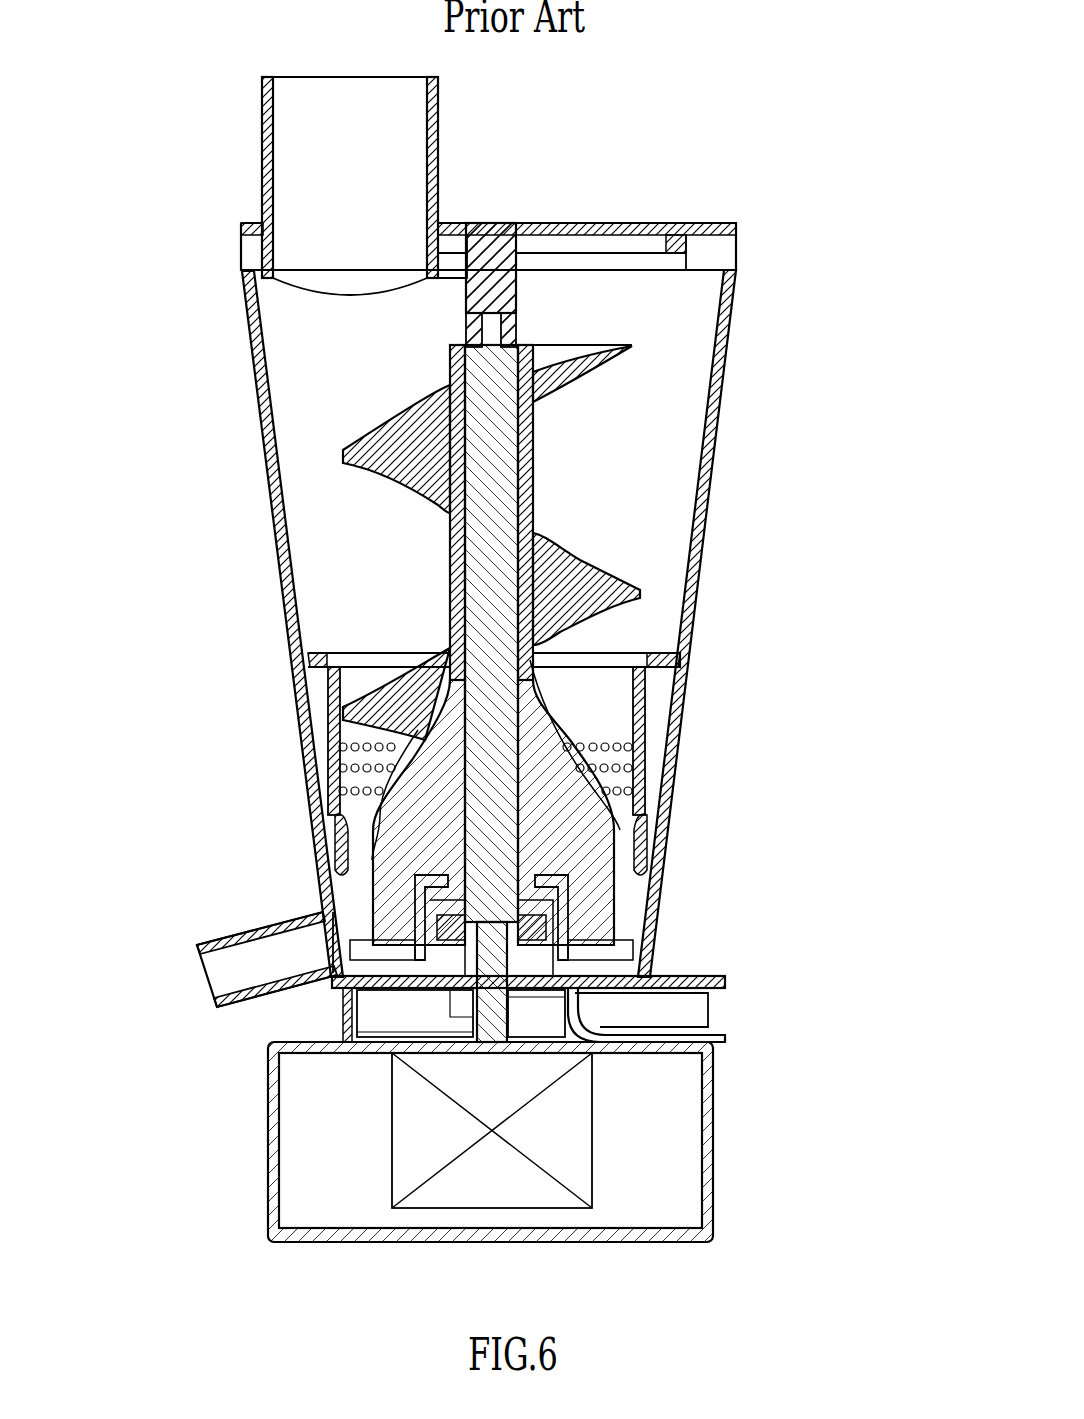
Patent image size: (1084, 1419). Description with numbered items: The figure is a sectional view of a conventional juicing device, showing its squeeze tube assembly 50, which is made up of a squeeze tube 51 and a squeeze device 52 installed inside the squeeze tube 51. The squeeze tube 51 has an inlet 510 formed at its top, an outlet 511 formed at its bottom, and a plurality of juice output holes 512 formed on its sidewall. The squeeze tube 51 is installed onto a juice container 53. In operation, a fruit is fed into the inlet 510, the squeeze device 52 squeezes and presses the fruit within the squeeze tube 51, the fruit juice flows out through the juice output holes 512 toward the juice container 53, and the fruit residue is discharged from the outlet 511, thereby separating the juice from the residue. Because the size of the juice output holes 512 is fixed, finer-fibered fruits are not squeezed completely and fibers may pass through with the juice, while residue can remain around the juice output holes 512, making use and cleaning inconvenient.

The squeeze tube assembly 50 is at (792, 283).
The squeeze tube 51 is at (702, 482).
The squeeze device 52 is at (585, 578).
The juice container 53 is at (272, 1110).
The inlet 510 is at (353, 107).
The outlet 511 is at (222, 983).
The juice output holes 512 is at (350, 792).